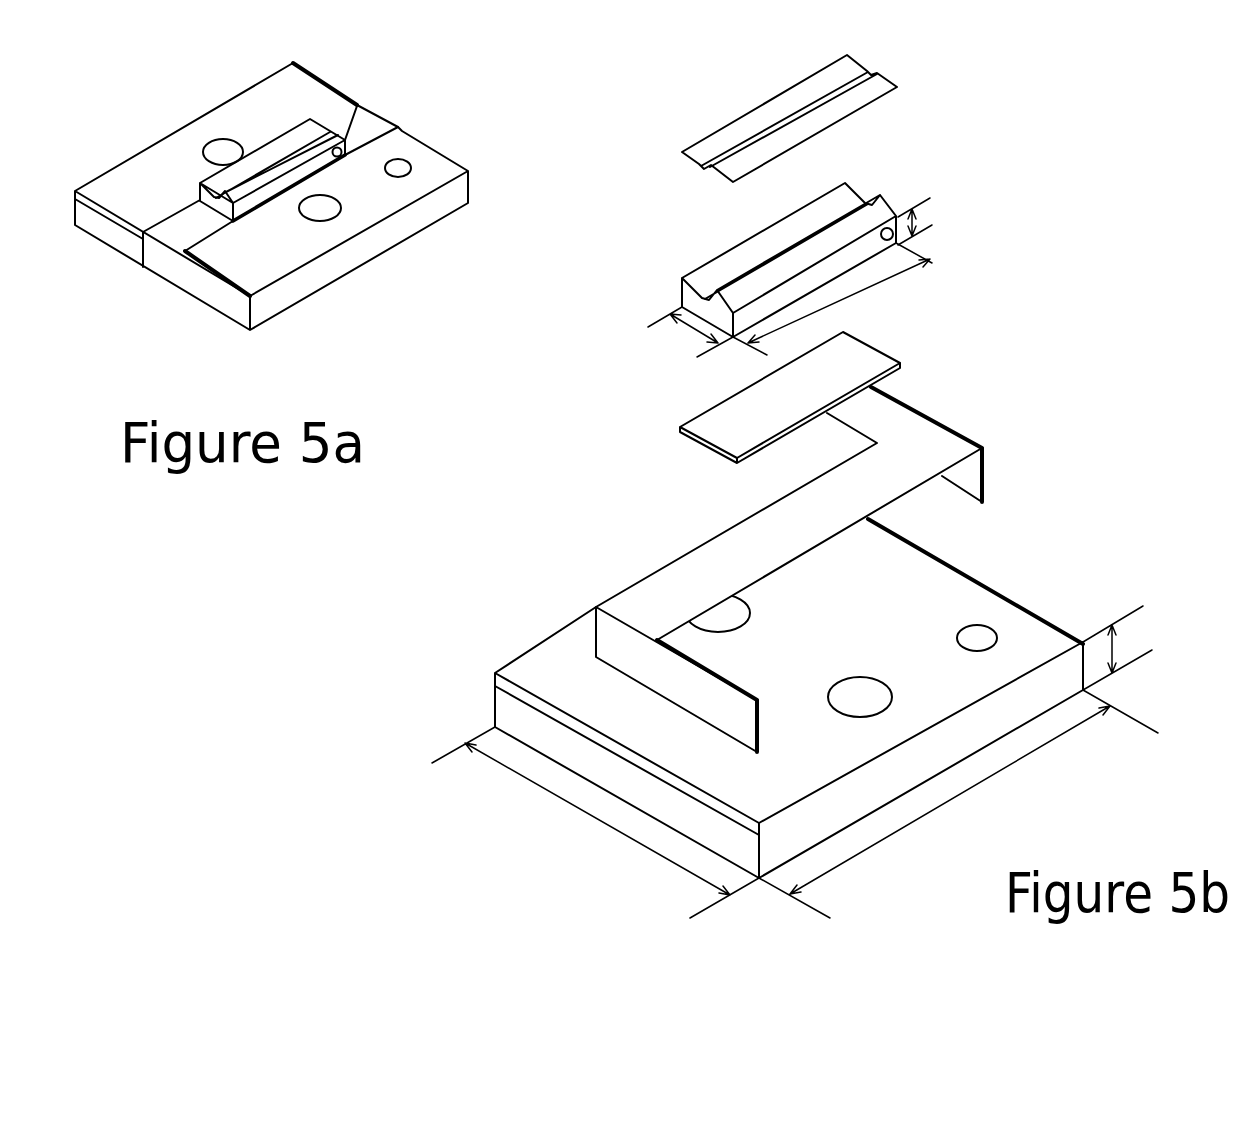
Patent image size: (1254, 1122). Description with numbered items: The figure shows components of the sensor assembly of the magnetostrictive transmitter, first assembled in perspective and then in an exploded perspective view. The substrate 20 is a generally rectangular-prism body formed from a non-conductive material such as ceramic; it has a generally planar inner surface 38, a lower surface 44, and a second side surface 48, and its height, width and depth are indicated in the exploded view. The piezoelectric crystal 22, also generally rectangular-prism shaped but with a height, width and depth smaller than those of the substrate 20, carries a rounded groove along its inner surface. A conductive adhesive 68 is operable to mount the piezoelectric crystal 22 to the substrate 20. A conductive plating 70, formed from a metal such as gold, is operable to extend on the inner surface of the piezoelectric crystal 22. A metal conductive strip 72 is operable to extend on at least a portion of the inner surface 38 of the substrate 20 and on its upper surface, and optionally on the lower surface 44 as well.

In FIG. 5A, the substrate 20 is at (363, 274).
In FIG. 5B, the substrate 20 is at (999, 580).
In FIG. 5A, the piezoelectric crystal 22 is at (200, 200).
In FIG. 5B, the piezoelectric crystal 22 is at (884, 194).
In FIG. 5B, the inner surface 38 is at (873, 563).
In FIG. 5B, the lower surface 44 is at (517, 715).
In FIG. 5B, the second side surface 48 is at (878, 766).
In FIG. 5A, the conductive adhesive 68 is at (198, 216).
In FIG. 5B, the conductive adhesive 68 is at (884, 339).
In FIG. 5A, the conductive plating 70 is at (275, 141).
In FIG. 5B, the conductive plating 70 is at (884, 69).
In FIG. 5A, the conductive strip 72 is at (371, 122).
In FIG. 5B, the conductive strip 72 is at (961, 423).